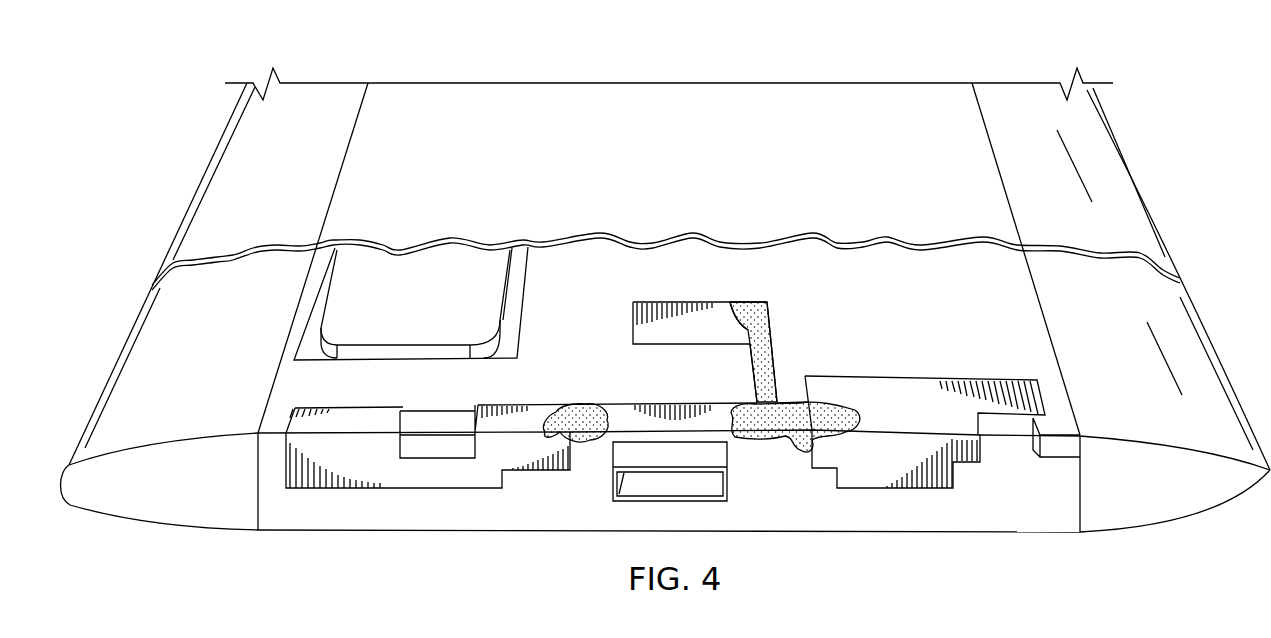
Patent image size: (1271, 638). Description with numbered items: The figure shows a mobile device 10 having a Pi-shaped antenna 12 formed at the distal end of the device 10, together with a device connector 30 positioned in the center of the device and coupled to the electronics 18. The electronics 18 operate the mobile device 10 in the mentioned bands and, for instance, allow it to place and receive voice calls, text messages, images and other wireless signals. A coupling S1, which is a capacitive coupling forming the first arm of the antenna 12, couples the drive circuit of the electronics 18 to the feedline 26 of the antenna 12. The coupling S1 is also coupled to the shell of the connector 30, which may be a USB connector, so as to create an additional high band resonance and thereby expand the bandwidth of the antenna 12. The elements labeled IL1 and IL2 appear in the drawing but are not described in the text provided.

The mobile device 10 is at (684, 165).
The electronics 18 is at (425, 308).
The antenna 12 is at (845, 323).
The feedline 26 is at (773, 352).
The device connector 30 is at (728, 485).
The coupling S1 is at (687, 323).
The insulation layer IL1 is at (547, 433).
The insulation layer IL2 is at (942, 420).